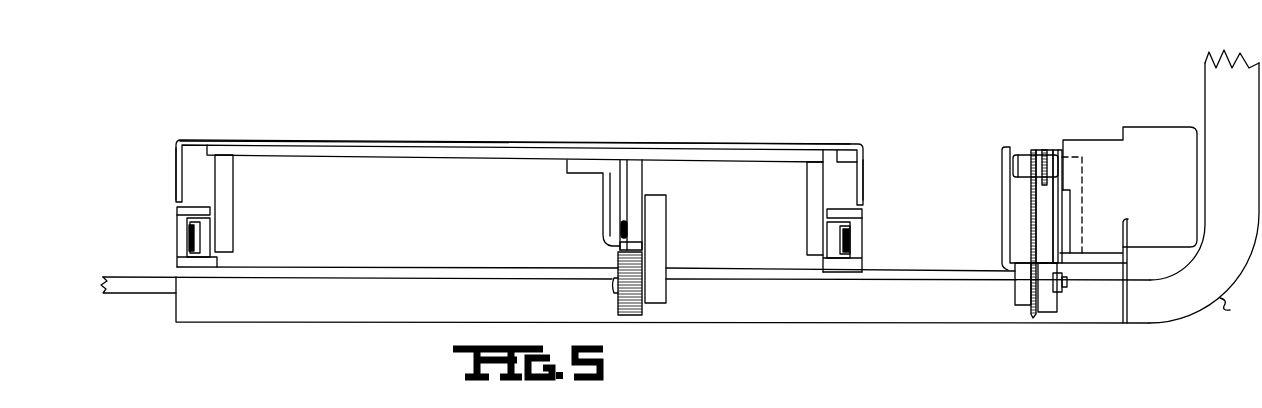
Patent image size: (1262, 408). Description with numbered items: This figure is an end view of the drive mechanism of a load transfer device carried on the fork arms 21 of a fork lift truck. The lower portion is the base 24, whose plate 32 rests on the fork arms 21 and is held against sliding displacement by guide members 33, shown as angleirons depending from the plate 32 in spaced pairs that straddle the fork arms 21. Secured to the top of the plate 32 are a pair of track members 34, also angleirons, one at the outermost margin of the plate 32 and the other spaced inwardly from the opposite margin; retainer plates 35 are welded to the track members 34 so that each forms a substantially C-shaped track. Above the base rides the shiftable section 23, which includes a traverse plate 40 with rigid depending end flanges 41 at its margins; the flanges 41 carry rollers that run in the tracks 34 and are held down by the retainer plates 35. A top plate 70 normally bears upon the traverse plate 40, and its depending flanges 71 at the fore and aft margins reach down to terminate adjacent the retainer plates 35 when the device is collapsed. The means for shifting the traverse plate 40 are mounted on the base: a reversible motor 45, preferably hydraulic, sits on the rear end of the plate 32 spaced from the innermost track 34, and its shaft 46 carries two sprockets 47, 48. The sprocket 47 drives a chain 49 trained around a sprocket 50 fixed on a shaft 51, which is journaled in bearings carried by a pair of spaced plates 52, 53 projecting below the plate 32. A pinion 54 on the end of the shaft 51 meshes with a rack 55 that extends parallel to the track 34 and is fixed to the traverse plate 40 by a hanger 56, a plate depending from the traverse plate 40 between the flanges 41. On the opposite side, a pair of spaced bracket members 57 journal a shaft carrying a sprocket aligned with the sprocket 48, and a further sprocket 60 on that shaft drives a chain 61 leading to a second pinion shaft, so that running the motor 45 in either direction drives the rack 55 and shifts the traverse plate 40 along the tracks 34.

The fork arms 21 is at (130, 290).
The shiftable section 23 is at (742, 142).
The base 24 is at (865, 228).
The plate 32 is at (348, 273).
The guide members 33 is at (260, 312).
The track members 34 is at (183, 252).
The retainer plates 35 is at (185, 212).
The traverse plate 40 is at (417, 156).
The depending end flanges 41 is at (228, 182).
The motor 45 is at (1145, 146).
The motor shaft 46 is at (1025, 156).
The sprocket 47 is at (1033, 150).
The sprocket 48 is at (1045, 150).
The chain 49 is at (1032, 214).
The sprocket 50 is at (1032, 319).
The shaft 51 is at (904, 284).
The plate 52 is at (1048, 305).
The plate 53 is at (657, 247).
The pinion 54 is at (628, 300).
The rack 55 is at (622, 248).
The hanger 56 is at (635, 177).
The bracket members 57 is at (1003, 240).
The sprocket 60 is at (1057, 150).
The chain 61 is at (1053, 207).
The top plate 70 is at (497, 145).
The depending flanges 71 is at (178, 169).